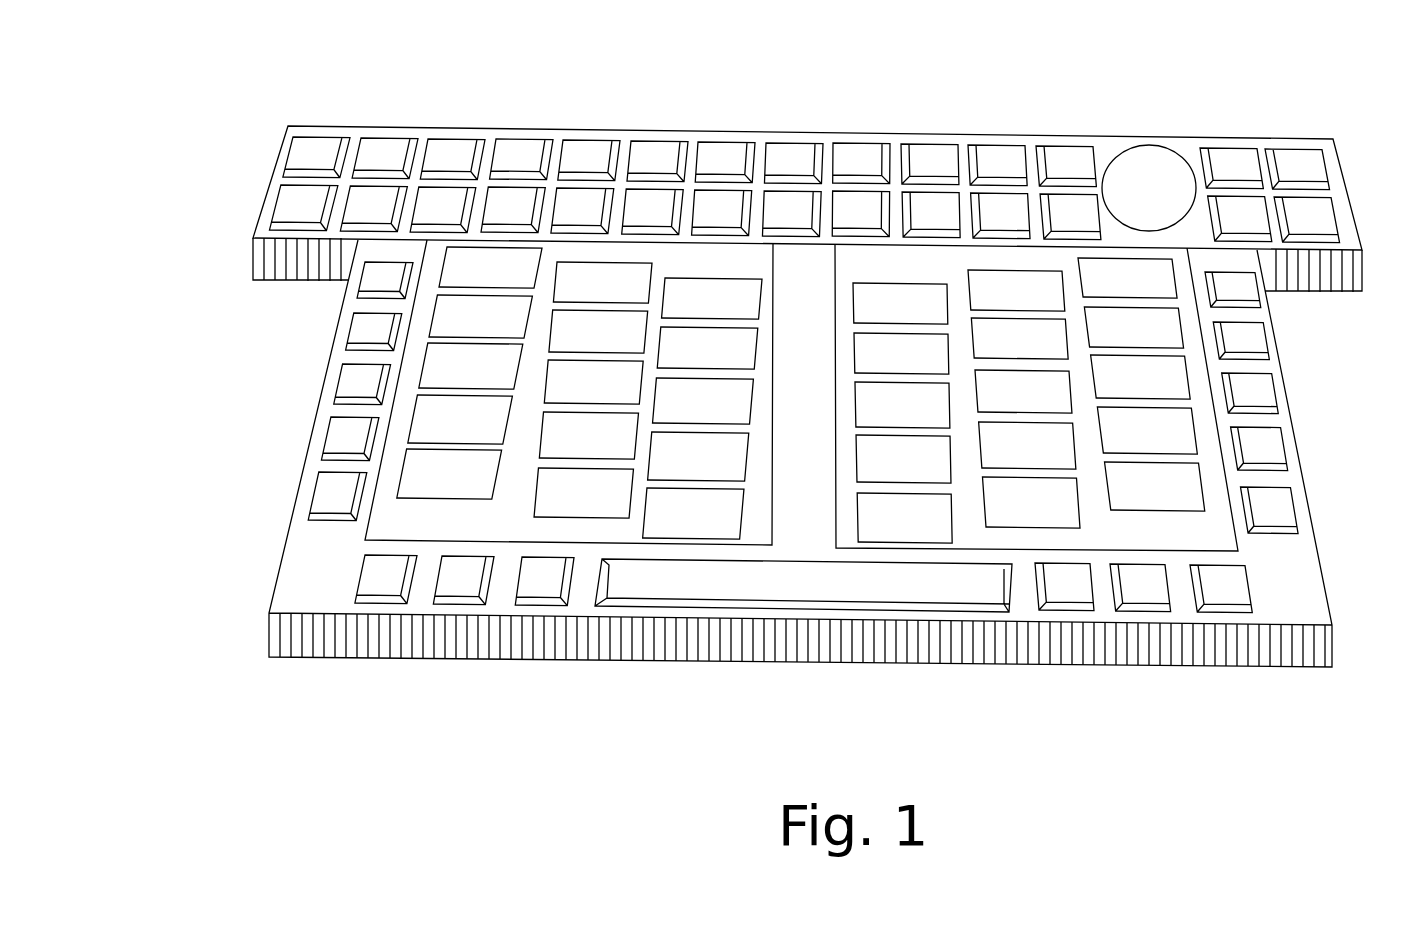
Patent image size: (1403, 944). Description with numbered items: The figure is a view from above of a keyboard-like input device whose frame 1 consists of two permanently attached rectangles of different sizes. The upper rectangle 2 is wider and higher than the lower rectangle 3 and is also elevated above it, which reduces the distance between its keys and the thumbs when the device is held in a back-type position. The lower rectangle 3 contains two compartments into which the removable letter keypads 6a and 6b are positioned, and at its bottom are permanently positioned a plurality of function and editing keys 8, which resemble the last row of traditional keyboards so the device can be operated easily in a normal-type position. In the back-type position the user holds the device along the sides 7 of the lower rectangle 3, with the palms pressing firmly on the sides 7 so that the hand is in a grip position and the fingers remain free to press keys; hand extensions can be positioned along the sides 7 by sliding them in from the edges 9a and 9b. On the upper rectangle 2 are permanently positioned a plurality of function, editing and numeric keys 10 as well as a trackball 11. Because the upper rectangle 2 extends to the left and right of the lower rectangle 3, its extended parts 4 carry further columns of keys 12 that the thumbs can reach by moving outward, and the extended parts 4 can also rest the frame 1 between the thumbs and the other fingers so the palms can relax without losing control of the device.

The frame 1 is at (738, 132).
The upper rectangle 2 is at (1107, 150).
The lower rectangle 3 is at (332, 566).
The extended parts 4 is at (1305, 272).
The removable letter keypad 6a is at (442, 525).
The removable letter keypad 6b is at (1222, 533).
The sides of the lower rectangle 7 is at (284, 537).
The function and editing keys 8 is at (1065, 585).
The edge 9a is at (272, 636).
The edge 9b is at (1333, 645).
The function, editing and numeric keys 10 is at (855, 158).
The trackball 11 is at (1138, 177).
The columns of keys 12 is at (1305, 165).